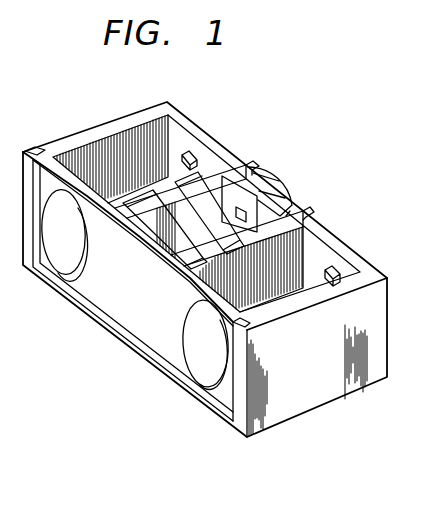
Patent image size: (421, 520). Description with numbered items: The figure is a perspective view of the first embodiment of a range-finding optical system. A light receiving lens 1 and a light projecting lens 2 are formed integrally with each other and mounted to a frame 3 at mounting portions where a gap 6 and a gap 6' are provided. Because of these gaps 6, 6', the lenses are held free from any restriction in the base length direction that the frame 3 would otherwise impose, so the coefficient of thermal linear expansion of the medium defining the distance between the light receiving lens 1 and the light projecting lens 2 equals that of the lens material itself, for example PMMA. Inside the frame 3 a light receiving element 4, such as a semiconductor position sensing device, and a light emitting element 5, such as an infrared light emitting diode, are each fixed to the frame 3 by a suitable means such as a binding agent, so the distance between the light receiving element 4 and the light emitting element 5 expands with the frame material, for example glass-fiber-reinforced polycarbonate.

The light receiving lens 1 is at (78, 252).
The light projecting lens 2 is at (188, 338).
The frame 3 is at (128, 117).
The light receiving element 4 is at (192, 153).
The light emitting element 5 is at (334, 271).
The gap 6 is at (35, 129).
The gap 6' is at (269, 336).